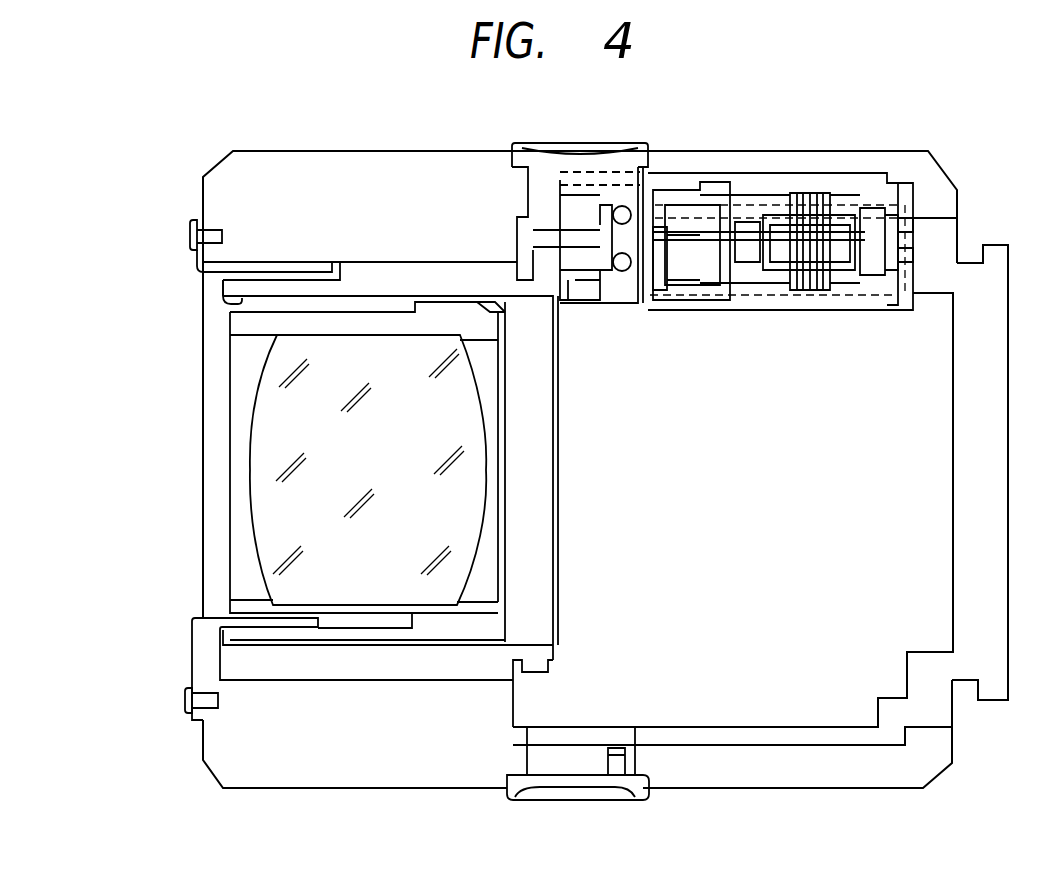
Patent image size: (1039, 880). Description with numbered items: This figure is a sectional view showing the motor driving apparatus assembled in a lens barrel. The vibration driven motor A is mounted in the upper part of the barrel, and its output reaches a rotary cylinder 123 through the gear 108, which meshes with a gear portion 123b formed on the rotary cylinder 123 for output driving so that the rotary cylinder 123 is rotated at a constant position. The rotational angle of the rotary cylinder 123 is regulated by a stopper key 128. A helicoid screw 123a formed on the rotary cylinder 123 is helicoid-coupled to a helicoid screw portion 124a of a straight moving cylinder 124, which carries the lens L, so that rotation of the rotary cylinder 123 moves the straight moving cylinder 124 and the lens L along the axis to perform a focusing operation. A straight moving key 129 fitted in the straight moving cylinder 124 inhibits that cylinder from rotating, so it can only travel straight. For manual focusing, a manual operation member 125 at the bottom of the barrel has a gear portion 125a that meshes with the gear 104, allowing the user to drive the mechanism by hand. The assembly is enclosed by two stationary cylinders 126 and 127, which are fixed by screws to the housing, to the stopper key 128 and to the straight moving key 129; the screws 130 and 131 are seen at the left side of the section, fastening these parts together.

The stationary cylinder 126 is at (286, 172).
The stationary cylinder 127 is at (932, 185).
The rotary cylinder 123 is at (435, 280).
The helicoid screw 123a is at (235, 301).
The gear portion 123b is at (552, 672).
The straight moving cylinder 124 is at (245, 327).
The helicoid screw portion 124a is at (482, 303).
The manual operation member 125 is at (613, 785).
The gear portion 125a is at (618, 748).
The stopper key 128 is at (196, 262).
The straight moving key 129 is at (190, 635).
The upper screw 130 is at (195, 228).
The lower screw 131 is at (185, 703).
The gear 108 is at (545, 225).
The gear 104 is at (628, 197).
The vibration driven motor A is at (729, 178).
The lens L is at (275, 404).